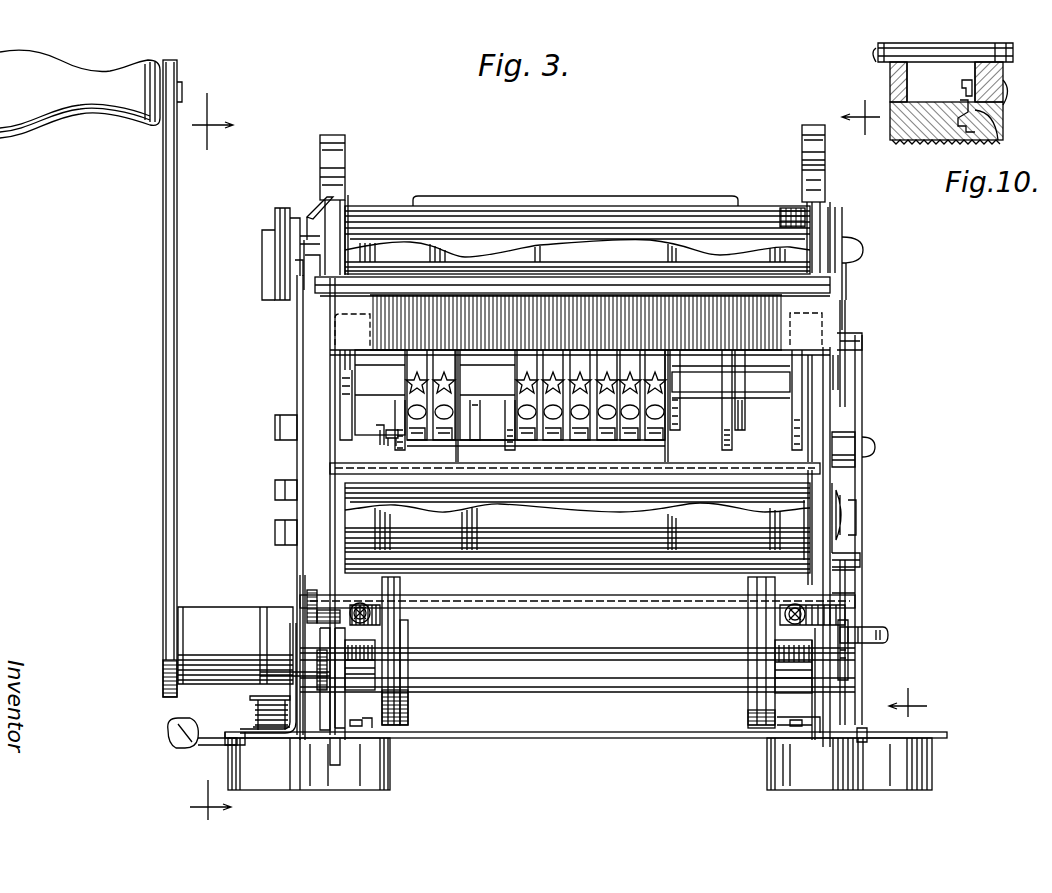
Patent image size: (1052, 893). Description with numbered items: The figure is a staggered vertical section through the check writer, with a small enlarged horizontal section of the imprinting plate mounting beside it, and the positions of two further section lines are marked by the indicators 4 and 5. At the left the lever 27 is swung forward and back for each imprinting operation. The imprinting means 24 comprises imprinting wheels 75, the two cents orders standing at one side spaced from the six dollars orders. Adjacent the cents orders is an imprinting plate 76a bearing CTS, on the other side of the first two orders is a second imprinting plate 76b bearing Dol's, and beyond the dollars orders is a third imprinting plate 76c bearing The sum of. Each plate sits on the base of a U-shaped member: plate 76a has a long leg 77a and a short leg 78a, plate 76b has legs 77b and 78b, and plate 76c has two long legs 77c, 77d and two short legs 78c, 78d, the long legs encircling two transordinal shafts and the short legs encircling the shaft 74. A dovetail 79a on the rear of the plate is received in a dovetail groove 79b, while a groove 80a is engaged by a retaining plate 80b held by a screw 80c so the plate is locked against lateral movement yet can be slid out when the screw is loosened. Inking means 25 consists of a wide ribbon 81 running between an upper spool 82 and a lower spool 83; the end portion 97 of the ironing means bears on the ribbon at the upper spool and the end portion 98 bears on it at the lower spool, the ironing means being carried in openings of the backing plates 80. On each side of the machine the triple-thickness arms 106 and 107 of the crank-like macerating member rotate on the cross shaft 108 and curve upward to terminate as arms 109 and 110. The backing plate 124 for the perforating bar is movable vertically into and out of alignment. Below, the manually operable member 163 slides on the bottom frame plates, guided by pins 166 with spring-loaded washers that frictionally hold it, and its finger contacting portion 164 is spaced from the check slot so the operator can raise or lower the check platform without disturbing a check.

In FIG. 3, the section line 4 is at (220, 456).
In FIG. 3, the section line 5 is at (879, 408).
In FIG. 3, the imprinting means 24 is at (689, 434).
In FIG. 3, the inking means 25 is at (773, 481).
In FIG. 3, the lever 27 is at (160, 440).
In FIG. 10, the shaft 74 is at (880, 62).
In FIG. 3, the imprinting wheels 75 is at (449, 440).
In FIG. 3, the imprinting plate 76a is at (370, 420).
In FIG. 10, the imprinting plate 76a is at (912, 140).
In FIG. 3, the second imprinting plate 76b is at (495, 398).
In FIG. 3, the third imprinting plate 76c is at (772, 398).
In FIG. 3, the long leg 77a is at (348, 350).
In FIG. 10, the long leg 77a is at (908, 78).
In FIG. 3, the long leg 77b is at (460, 446).
In FIG. 3, the long leg 77c is at (670, 436).
In FIG. 3, the long leg 77d is at (733, 402).
In FIG. 3, the short leg 78a is at (400, 448).
In FIG. 10, the short leg 78a is at (1003, 110).
In FIG. 3, the short leg 78b is at (505, 440).
In FIG. 3, the short leg 78c is at (722, 440).
In FIG. 3, the short leg 78d is at (792, 440).
In FIG. 10, the dovetail 79a is at (942, 107).
In FIG. 10, the dovetail groove 79b is at (890, 100).
In FIG. 3, the backing plates 80 is at (380, 420).
In FIG. 10, the groove 80a is at (998, 140).
In FIG. 10, the retaining plate 80b is at (958, 132).
In FIG. 3, the screw 80c is at (388, 440).
In FIG. 10, the screw 80c is at (965, 82).
In FIG. 3, the ribbon 81 is at (775, 212).
In FIG. 3, the upper spool 82 is at (348, 192).
In FIG. 3, the lower spool 83 is at (810, 578).
In FIG. 3, the end portion 97 is at (588, 204).
In FIG. 3, the end portion 98 is at (648, 562).
In FIG. 3, the arm 106 is at (410, 708).
In FIG. 3, the arm 107 is at (748, 712).
In FIG. 3, the cross shaft 108 is at (612, 658).
In FIG. 3, the arm 109 is at (402, 645).
In FIG. 3, the arm 110 is at (748, 630).
In FIG. 3, the backing plate 124 is at (825, 302).
In FIG. 3, the manually operable member 163 is at (240, 729).
In FIG. 3, the finger contacting portion 164 is at (170, 746).
In FIG. 3, the pins 166 is at (255, 705).